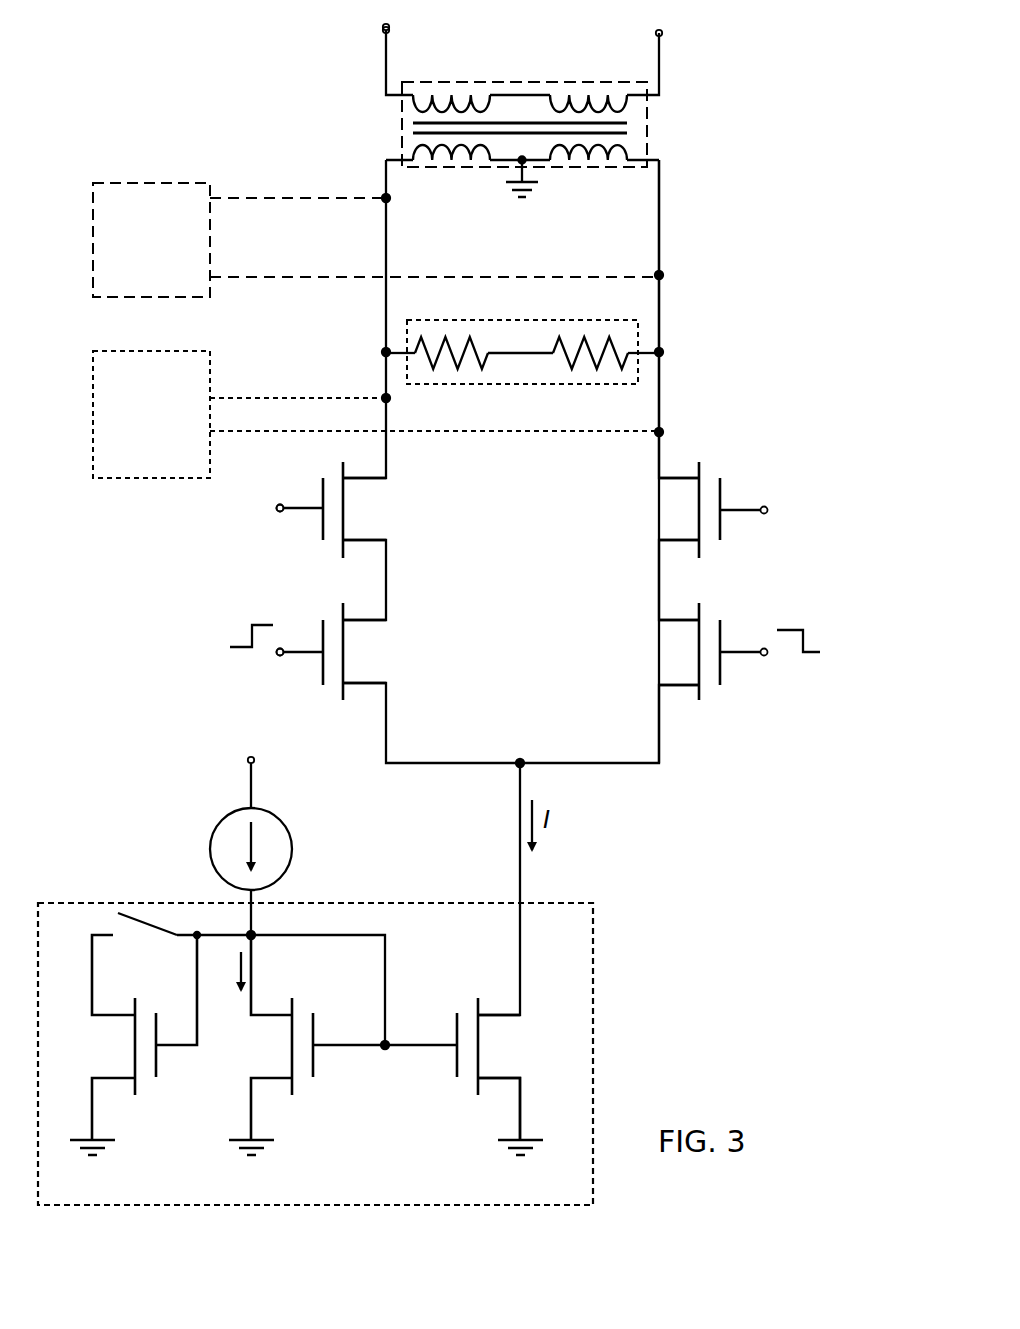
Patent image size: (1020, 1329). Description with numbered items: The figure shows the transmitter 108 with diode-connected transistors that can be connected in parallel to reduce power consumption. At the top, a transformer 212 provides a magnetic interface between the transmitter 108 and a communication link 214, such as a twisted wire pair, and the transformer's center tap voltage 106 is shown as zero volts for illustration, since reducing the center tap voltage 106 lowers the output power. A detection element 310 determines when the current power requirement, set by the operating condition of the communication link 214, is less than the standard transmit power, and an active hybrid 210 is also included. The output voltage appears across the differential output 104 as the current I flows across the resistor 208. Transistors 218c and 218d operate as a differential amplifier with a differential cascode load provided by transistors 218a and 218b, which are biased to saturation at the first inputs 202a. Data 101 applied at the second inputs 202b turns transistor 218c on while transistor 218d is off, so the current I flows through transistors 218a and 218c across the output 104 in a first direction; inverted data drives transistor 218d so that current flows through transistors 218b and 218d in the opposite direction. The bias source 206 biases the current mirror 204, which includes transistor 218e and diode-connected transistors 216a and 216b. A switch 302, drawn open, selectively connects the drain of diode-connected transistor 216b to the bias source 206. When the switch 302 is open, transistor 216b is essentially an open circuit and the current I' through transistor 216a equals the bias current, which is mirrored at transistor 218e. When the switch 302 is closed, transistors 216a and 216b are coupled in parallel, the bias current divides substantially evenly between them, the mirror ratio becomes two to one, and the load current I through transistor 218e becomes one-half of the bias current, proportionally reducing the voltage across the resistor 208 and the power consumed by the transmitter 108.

The transmitter 108 is at (196, 80).
The communication link 214 is at (383, 30).
The transformer 212 is at (400, 112).
The center tap voltage 106 is at (540, 198).
The detection element 310 is at (158, 183).
The active hybrid 210 is at (160, 351).
The resistor 208 is at (552, 320).
The differential output 104 is at (667, 348).
The transistor 218a is at (388, 512).
The transistor 218b is at (655, 513).
The transistor 218c is at (388, 652).
The transistor 218d is at (657, 657).
The transistor 218e is at (522, 1045).
The first inputs 202a is at (270, 512).
The second inputs 202b is at (272, 656).
The data 101 is at (534, 628).
The bias source 206 is at (283, 820).
The current mirror 204 is at (565, 903).
The switch 302 is at (150, 933).
The diode-connected transistor 216a is at (253, 1045).
The diode-connected transistor 216b is at (92, 1047).